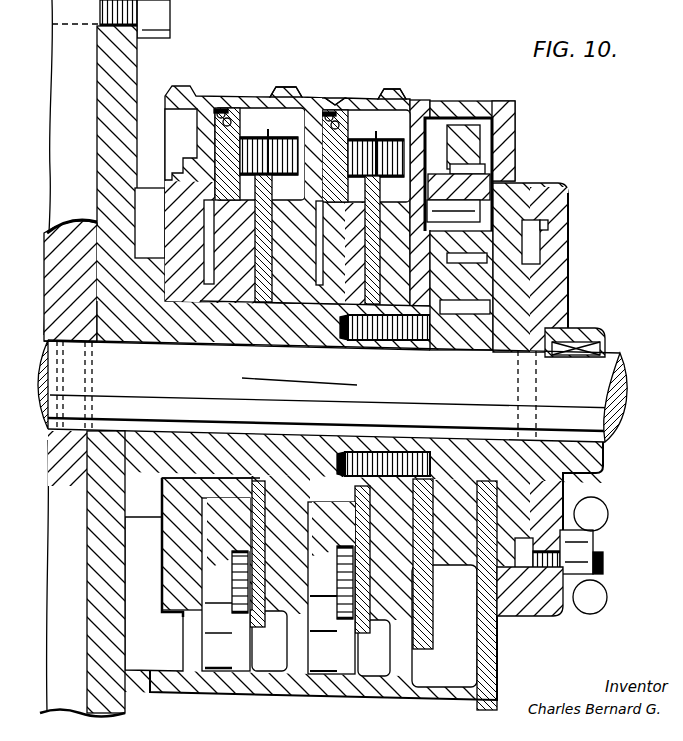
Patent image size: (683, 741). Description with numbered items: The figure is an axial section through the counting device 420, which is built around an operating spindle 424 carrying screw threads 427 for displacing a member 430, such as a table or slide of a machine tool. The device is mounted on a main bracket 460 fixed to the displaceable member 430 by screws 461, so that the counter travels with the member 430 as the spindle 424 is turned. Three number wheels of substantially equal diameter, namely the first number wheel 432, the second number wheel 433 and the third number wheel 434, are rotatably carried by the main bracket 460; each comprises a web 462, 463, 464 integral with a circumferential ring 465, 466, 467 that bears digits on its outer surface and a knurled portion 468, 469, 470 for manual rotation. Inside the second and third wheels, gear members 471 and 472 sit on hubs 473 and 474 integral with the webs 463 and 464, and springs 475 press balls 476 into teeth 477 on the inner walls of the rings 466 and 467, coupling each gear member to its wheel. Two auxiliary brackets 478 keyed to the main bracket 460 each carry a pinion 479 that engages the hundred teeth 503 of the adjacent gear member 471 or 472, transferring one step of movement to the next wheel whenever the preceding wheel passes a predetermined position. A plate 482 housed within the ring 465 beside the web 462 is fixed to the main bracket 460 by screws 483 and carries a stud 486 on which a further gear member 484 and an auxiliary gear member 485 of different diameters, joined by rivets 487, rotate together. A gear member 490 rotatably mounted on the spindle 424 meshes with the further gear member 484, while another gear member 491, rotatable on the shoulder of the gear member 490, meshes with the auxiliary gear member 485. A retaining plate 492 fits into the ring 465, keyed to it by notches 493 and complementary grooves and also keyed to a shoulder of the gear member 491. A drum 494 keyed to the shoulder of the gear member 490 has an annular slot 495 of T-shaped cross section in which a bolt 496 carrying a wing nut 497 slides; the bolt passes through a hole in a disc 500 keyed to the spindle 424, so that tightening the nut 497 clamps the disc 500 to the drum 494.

The counting device 420 is at (273, 705).
The operating spindle 424 is at (594, 380).
The screw threads 427 is at (80, 354).
The displaceable member 430 is at (50, 513).
The first number wheel 432 is at (420, 104).
The second number wheel 433 is at (337, 102).
The third number wheel 434 is at (246, 108).
The main bracket 460 is at (92, 594).
The screws 461 is at (145, 24).
The web 462 is at (445, 180).
The web 463 is at (560, 194).
The web 464 is at (541, 227).
The circumferential ring 465 is at (483, 102).
The circumferential ring 466 is at (356, 109).
The circumferential ring 467 is at (225, 108).
The knurled portion 468 is at (388, 97).
The knurled portion 469 is at (285, 101).
The knurled portion 470 is at (232, 83).
The gear member 471 is at (430, 200).
The gear member 472 is at (300, 180).
The hub 473 is at (271, 490).
The hub 474 is at (196, 486).
The springs 475 is at (215, 132).
The balls 476 is at (222, 116).
The teeth 477 is at (195, 690).
The auxiliary brackets 478 is at (300, 214).
The pinion 479 is at (215, 160).
The plate 482 is at (458, 262).
The screws 483 is at (440, 313).
The further gear member 484 is at (488, 130).
The auxiliary gear member 485 is at (462, 182).
The stud 486 is at (480, 211).
The rivets 487 is at (478, 156).
The gear member 490 is at (566, 328).
The other gear member 491 is at (472, 302).
The retaining plate 492 is at (498, 651).
The notches 493 is at (503, 108).
The drum 494 is at (515, 614).
The annular slot 495 is at (532, 244).
The bolt 496 is at (525, 550).
The wing nut 497 is at (592, 612).
The disc 500 is at (555, 485).
The teeth 503 is at (240, 615).